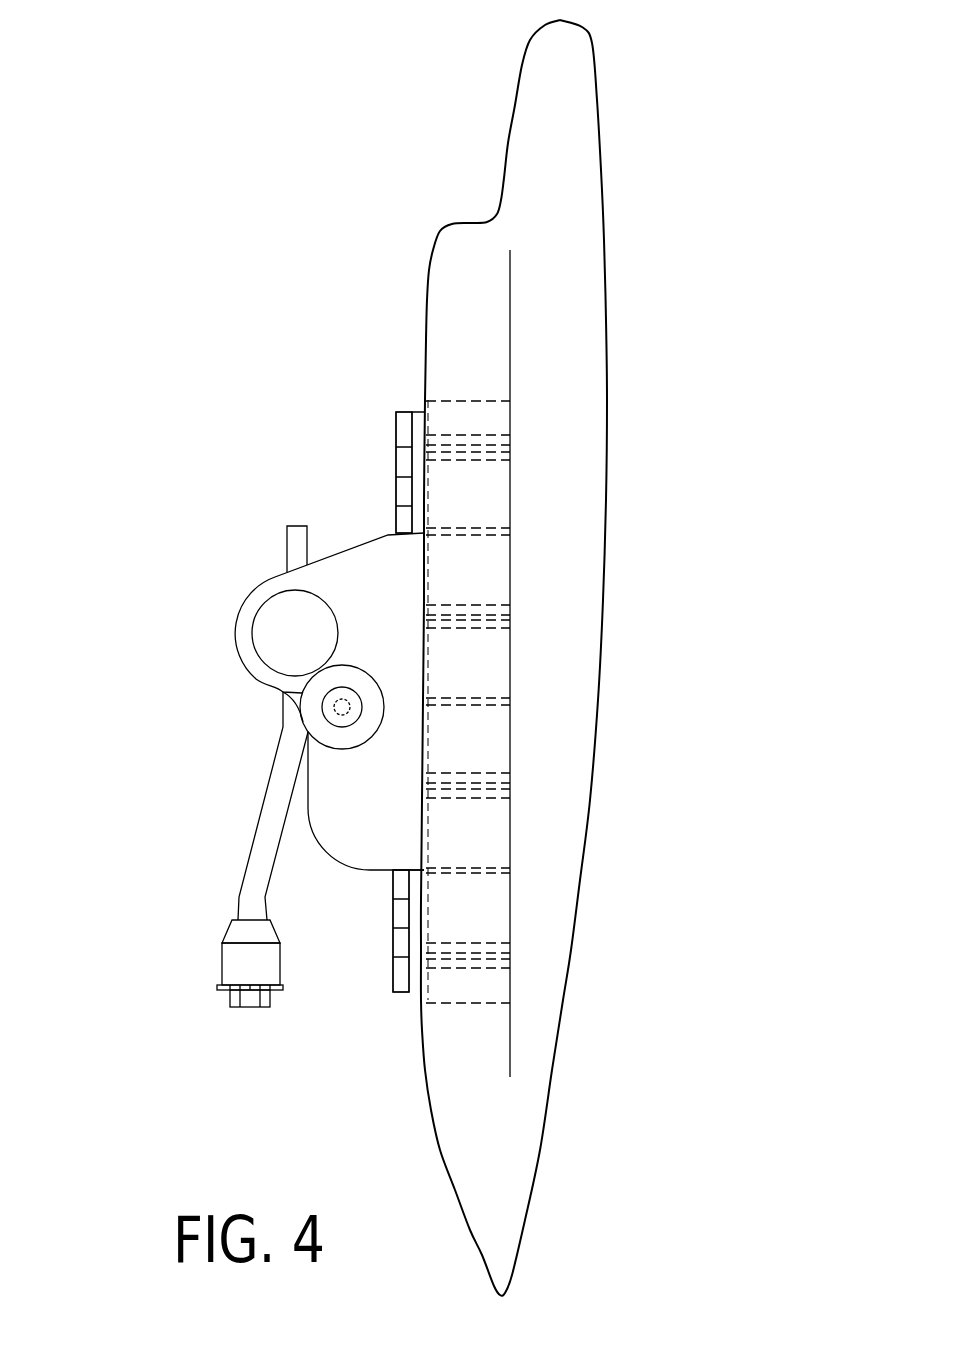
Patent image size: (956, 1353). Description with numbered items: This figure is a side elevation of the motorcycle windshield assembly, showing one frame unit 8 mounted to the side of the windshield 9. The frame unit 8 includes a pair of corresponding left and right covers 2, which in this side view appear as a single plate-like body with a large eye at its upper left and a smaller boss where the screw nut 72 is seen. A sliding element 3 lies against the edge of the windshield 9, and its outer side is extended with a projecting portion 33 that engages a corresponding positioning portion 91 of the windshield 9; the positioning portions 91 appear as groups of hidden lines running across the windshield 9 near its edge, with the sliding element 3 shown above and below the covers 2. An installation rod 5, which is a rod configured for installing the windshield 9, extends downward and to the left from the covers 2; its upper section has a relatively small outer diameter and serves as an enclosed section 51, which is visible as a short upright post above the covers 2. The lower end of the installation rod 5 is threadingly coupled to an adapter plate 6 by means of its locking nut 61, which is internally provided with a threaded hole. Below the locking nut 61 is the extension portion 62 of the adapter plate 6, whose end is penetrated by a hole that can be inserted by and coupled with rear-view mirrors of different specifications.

The left and right covers 2 is at (372, 562).
The sliding element 3 is at (404, 428).
The projecting portion 33 is at (420, 423).
The installation rod 5 is at (270, 828).
The enclosed section 51 is at (295, 545).
The adapter plate 6 is at (137, 978).
The locking nut 61 is at (228, 960).
The extension portion 62 is at (223, 990).
The screw nut 72 is at (317, 712).
The frame unit 8 is at (162, 760).
The windshield 9 is at (575, 465).
The positioning portion 91 is at (472, 442).